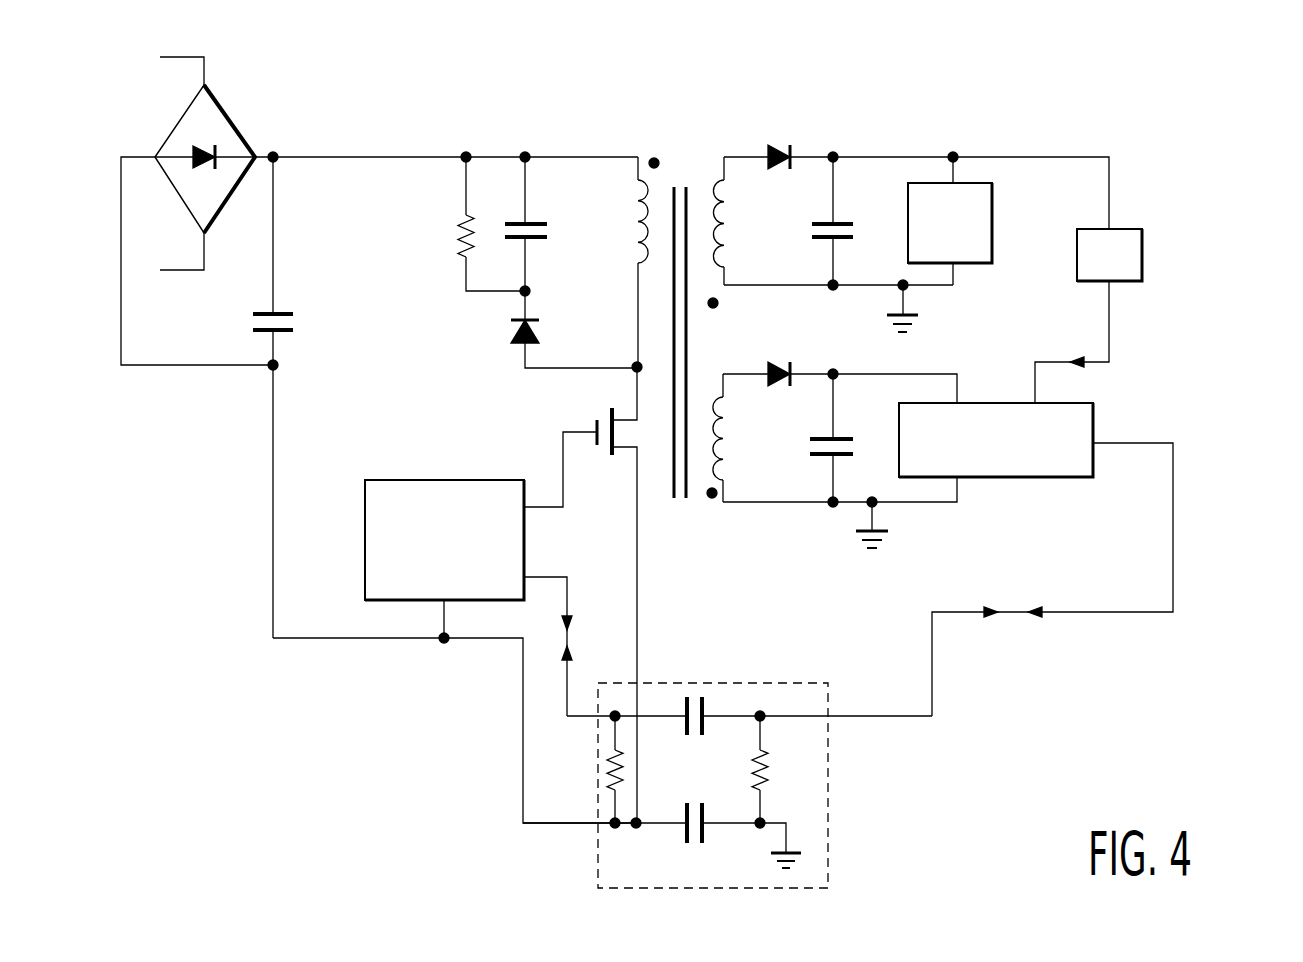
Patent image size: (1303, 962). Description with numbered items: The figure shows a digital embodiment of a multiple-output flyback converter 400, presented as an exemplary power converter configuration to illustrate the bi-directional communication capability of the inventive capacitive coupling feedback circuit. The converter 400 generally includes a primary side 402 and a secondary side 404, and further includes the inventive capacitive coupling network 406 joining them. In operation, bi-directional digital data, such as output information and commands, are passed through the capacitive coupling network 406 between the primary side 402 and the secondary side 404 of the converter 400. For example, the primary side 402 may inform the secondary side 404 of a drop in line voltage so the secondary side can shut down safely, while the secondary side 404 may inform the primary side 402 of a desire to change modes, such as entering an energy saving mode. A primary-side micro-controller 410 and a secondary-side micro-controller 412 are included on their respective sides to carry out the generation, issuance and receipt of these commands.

The multiple-output flyback converter 400 is at (880, 142).
The primary side 402 is at (232, 537).
The secondary side 404 is at (1212, 488).
The capacitive coupling network 406 is at (828, 790).
The primary-side micro-controller 410 is at (457, 591).
The secondary-side micro-controller 412 is at (983, 480).